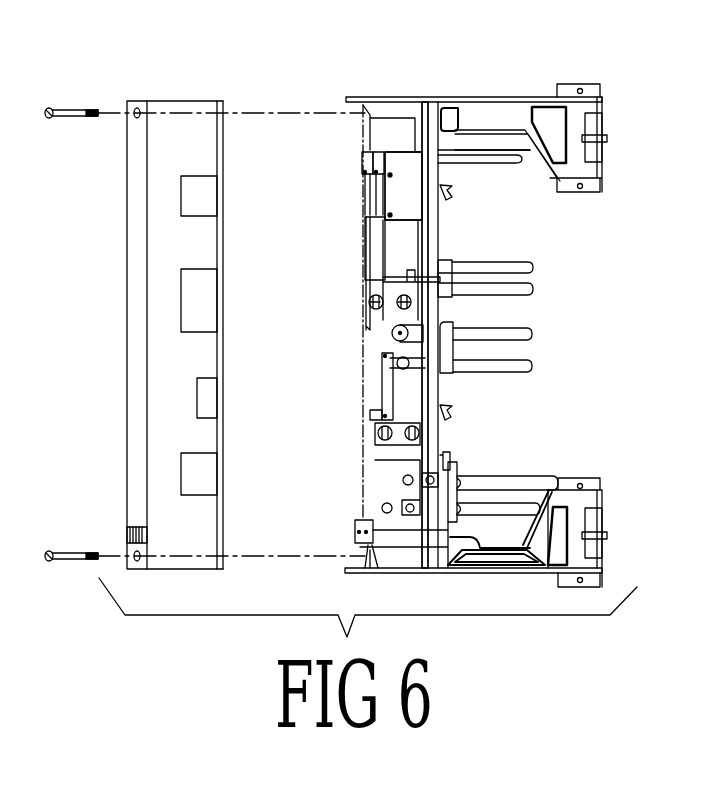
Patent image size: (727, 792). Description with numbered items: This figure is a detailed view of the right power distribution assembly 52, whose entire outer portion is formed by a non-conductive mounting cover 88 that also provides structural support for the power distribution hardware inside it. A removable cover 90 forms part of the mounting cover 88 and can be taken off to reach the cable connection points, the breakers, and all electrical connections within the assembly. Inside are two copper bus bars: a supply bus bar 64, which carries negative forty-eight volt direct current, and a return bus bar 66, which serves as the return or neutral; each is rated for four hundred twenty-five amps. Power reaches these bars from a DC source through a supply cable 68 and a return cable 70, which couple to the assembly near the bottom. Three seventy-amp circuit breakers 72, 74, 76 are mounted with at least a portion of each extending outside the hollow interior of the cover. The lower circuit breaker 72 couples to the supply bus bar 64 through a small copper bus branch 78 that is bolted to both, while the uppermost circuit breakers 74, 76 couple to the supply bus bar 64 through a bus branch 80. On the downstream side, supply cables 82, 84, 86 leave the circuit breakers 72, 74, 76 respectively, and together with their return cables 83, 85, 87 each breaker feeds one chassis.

The removable cover 90 is at (132, 222).
The mounting cover 88 is at (436, 97).
The circuit breaker 76 is at (368, 193).
The circuit breaker 74 is at (417, 204).
The bus branch 80 is at (375, 253).
The return bus bar 66 is at (373, 300).
The supply bus bar 64 is at (375, 335).
The bus branch 78 is at (378, 415).
The circuit breaker 72 is at (420, 405).
The supply cable 86 is at (470, 149).
The supply cable 84 is at (512, 165).
The return cable 87 is at (532, 266).
The return cable 85 is at (533, 291).
The right power distribution assembly 52 is at (540, 349).
The return cable 83 is at (525, 341).
The supply cable 82 is at (522, 374).
The return cable 70 is at (495, 480).
The supply cable 68 is at (525, 505).